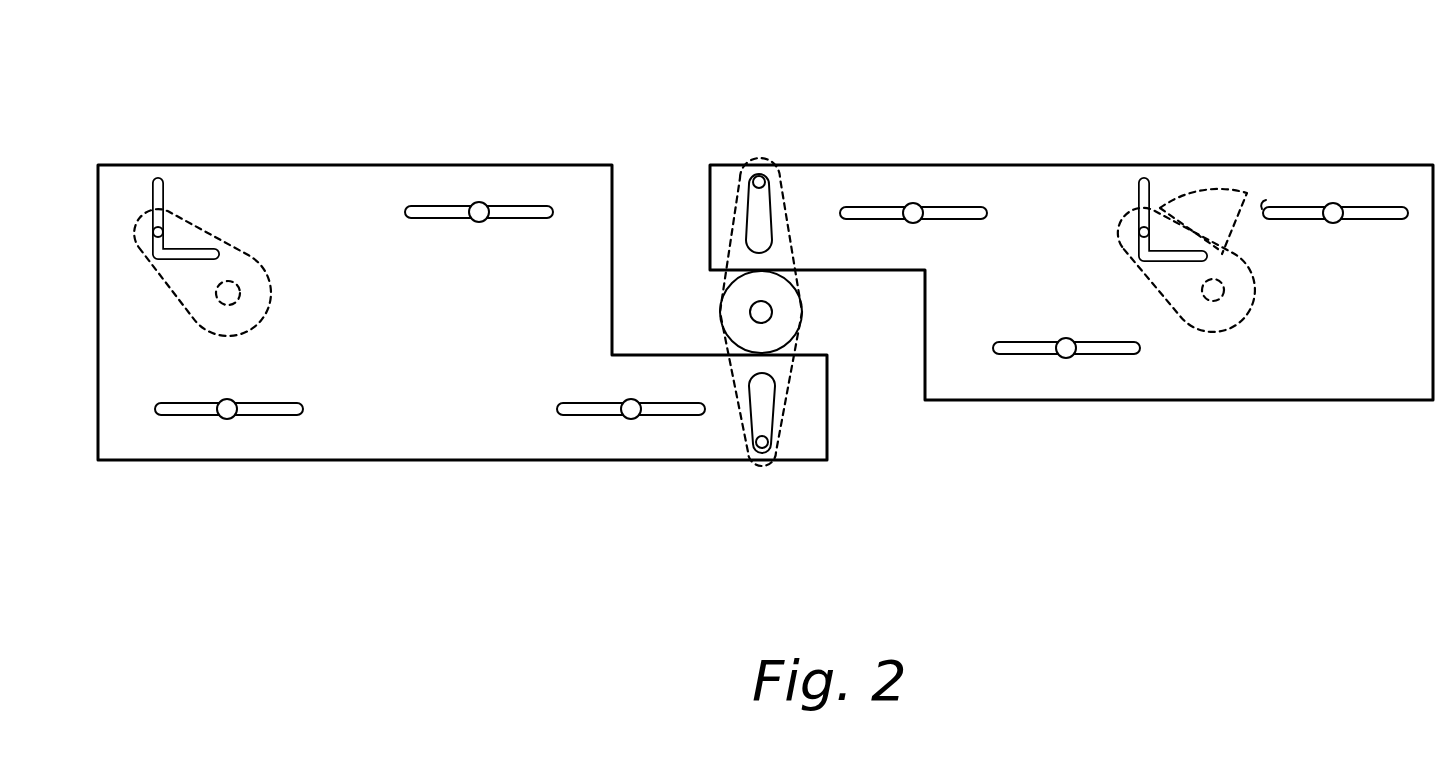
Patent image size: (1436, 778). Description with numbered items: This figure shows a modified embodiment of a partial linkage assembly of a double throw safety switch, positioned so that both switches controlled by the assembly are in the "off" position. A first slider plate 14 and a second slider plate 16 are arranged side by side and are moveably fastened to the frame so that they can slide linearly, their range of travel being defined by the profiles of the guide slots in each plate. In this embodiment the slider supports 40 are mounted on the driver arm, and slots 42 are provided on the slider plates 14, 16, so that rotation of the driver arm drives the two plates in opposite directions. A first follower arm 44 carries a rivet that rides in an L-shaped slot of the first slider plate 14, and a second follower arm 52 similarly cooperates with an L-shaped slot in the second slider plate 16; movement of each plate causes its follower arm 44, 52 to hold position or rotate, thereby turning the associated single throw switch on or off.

The first slider plate 14 is at (1122, 408).
The second slider plate 16 is at (662, 470).
The slider support 40 is at (765, 181).
The slot 42 is at (746, 220).
The first follower arm 44 is at (1218, 281).
The second follower arm 52 is at (236, 282).